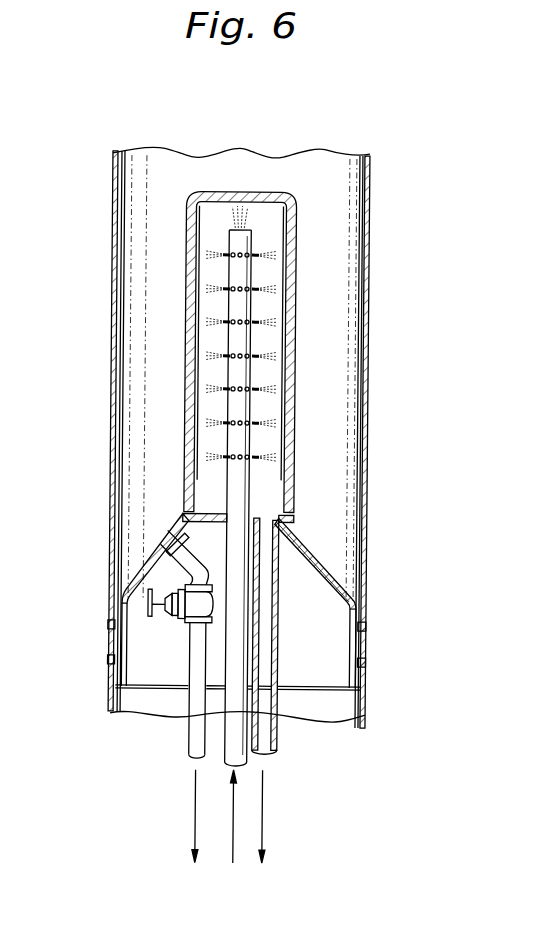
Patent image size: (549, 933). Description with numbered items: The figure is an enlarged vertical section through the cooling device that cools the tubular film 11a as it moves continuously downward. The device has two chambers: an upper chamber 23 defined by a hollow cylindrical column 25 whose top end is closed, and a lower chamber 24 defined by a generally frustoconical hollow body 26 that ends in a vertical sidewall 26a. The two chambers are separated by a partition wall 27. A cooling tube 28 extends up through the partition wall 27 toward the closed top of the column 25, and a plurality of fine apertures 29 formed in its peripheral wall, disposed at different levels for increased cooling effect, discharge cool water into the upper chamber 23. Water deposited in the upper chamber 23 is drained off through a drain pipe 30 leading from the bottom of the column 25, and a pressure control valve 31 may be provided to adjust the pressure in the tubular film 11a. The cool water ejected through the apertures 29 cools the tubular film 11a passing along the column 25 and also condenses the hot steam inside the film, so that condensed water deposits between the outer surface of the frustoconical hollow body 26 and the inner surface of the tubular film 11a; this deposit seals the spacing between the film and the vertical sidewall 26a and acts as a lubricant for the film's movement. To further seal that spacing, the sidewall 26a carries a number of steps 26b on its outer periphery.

The tubular film 11a is at (370, 332).
The upper chamber 23 is at (206, 304).
The lower chamber 24 is at (171, 556).
The hollow cylindrical column 25 is at (297, 323).
The frustoconical hollow body 26 is at (325, 551).
The vertical sidewall 26a is at (124, 652).
The steps 26b is at (113, 660).
The partition wall 27 is at (210, 518).
The cooling tube 28 is at (234, 372).
The fine apertures 29 is at (248, 288).
The drain pipe 30 is at (280, 589).
The pressure control valve 31 is at (198, 609).